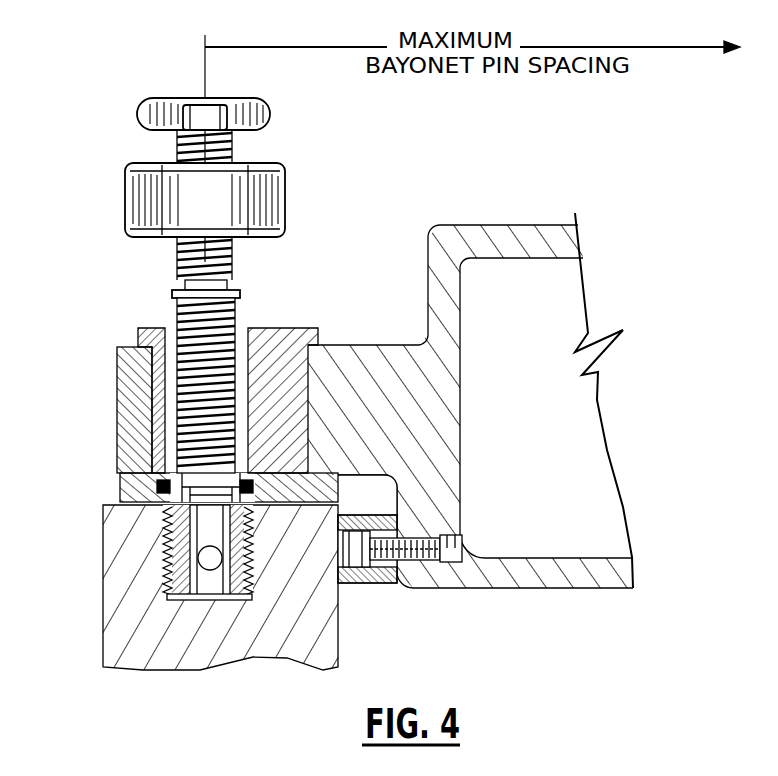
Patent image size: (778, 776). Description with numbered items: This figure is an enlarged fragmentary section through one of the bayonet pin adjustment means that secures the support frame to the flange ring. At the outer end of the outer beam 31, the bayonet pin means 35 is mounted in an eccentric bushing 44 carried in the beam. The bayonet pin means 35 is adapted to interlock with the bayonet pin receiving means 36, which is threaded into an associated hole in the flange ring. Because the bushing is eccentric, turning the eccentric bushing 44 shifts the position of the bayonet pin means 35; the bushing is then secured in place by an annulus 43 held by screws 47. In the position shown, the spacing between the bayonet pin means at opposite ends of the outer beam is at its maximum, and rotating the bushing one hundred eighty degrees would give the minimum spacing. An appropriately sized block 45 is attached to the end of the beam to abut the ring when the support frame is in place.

The outer beam 31 is at (547, 227).
The bayonet pin means 35 is at (118, 156).
The bayonet pin receiving means 36 is at (160, 573).
The annulus 43 is at (123, 487).
The eccentric bushing 44 is at (282, 328).
The block 45 is at (375, 585).
The screw 47 is at (130, 442).